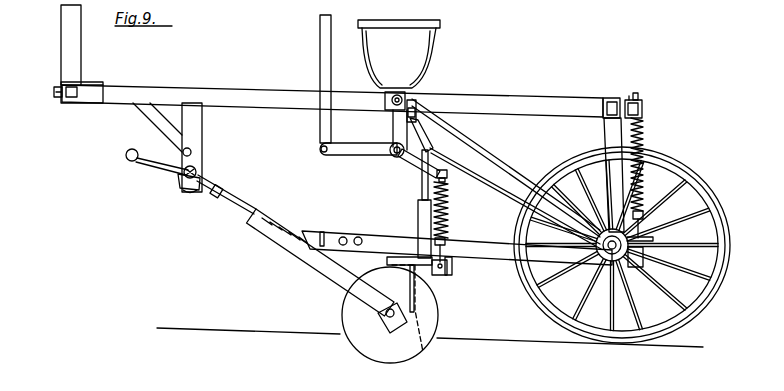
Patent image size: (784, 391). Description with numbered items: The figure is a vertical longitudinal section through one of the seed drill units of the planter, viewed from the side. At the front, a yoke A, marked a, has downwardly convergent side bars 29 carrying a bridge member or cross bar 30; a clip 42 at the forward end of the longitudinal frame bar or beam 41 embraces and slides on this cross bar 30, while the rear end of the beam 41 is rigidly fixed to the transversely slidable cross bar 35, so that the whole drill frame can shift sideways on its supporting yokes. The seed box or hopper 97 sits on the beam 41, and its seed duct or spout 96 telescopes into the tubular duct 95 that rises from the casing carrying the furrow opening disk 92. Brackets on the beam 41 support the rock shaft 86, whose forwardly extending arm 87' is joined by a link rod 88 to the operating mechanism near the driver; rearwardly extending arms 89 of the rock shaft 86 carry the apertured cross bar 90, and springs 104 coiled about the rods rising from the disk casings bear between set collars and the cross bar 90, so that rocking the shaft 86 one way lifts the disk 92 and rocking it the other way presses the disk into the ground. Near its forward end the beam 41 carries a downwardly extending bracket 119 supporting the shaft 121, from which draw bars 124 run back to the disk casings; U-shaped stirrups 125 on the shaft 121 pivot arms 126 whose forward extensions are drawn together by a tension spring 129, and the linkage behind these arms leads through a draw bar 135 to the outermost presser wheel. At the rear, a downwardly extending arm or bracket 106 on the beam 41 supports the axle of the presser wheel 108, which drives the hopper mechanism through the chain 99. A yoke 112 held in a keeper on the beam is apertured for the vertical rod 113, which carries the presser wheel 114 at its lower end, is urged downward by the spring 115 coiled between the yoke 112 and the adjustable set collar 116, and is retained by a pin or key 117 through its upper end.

The side bars 29 is at (66, 37).
The bridge member or cross bar 30 is at (67, 102).
The clips 42 is at (56, 94).
The beams or longitudinal frame bars 41 is at (225, 93).
The brackets 119 is at (202, 133).
The shaft 121 is at (198, 172).
The tension spring 129 is at (128, 161).
The inner arms 126 is at (165, 180).
The U-shaped supporting members or stirrups 125 is at (188, 196).
The draw bars 124 is at (305, 252).
The furrow opening disks 92 is at (360, 340).
The seed box or hopper 97 is at (427, 44).
The link rods 88 is at (322, 68).
The forwardly extending arm 87' is at (358, 164).
The rock shaft 86 is at (392, 145).
The rearwardly extending arms 89 is at (415, 163).
The cross bar 90 is at (446, 178).
The springs 104 is at (443, 224).
The seed duct or spout 96 is at (447, 142).
The chain 99 is at (510, 190).
The tubular duct 95 is at (420, 219).
The yoke a is at (435, 280).
The draw bars 135 is at (490, 258).
The cross bar 35 is at (608, 98).
The vertical rod 113 is at (643, 110).
The pin or key 117 is at (643, 98).
The yoke 112 is at (630, 98).
The arms or brackets 106 is at (606, 133).
The spring 115 is at (644, 144).
The presser wheel 114 is at (693, 318).
The set collar 116 is at (687, 175).
The presser wheels 108 is at (558, 325).